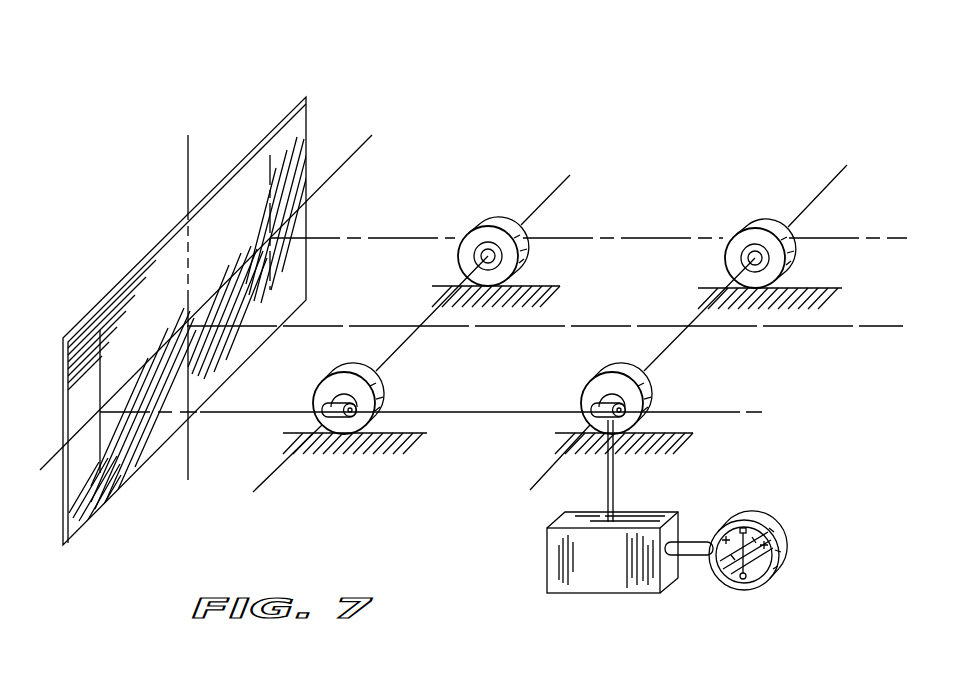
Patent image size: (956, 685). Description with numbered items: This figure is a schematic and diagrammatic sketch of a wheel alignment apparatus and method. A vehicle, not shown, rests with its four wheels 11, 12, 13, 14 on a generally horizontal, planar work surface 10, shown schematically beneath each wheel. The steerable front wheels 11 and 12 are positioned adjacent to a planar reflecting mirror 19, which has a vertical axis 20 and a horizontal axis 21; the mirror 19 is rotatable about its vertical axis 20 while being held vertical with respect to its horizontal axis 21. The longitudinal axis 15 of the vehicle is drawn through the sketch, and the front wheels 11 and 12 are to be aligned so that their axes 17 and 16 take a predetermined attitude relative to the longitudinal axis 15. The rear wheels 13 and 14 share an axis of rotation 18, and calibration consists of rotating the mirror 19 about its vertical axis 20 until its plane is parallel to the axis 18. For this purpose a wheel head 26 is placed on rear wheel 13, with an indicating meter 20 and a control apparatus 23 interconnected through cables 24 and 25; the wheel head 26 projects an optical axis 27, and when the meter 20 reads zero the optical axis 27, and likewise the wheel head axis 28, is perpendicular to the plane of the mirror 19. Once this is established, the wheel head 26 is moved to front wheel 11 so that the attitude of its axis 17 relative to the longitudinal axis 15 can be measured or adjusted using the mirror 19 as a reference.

The work surface 10 is at (820, 378).
The front wheel 11 is at (343, 364).
The front wheel 12 is at (500, 222).
The rear wheel 13 is at (622, 368).
The rear wheel 14 is at (766, 226).
The longitudinal axis 15 is at (866, 328).
The axis 16 is at (566, 178).
The axis 17 is at (393, 358).
The axis of rear wheels 18 is at (665, 353).
The mirror 19 is at (256, 138).
The vertical axis / indicating meter 20 is at (187, 168).
The horizontal axis 21 is at (346, 166).
The control apparatus 23 is at (630, 568).
The cable 24 is at (617, 473).
The cable 25 is at (692, 538).
The wheel head 26 is at (318, 427).
The optical axis 27 is at (225, 413).
The wheel head axis 28 is at (403, 238).